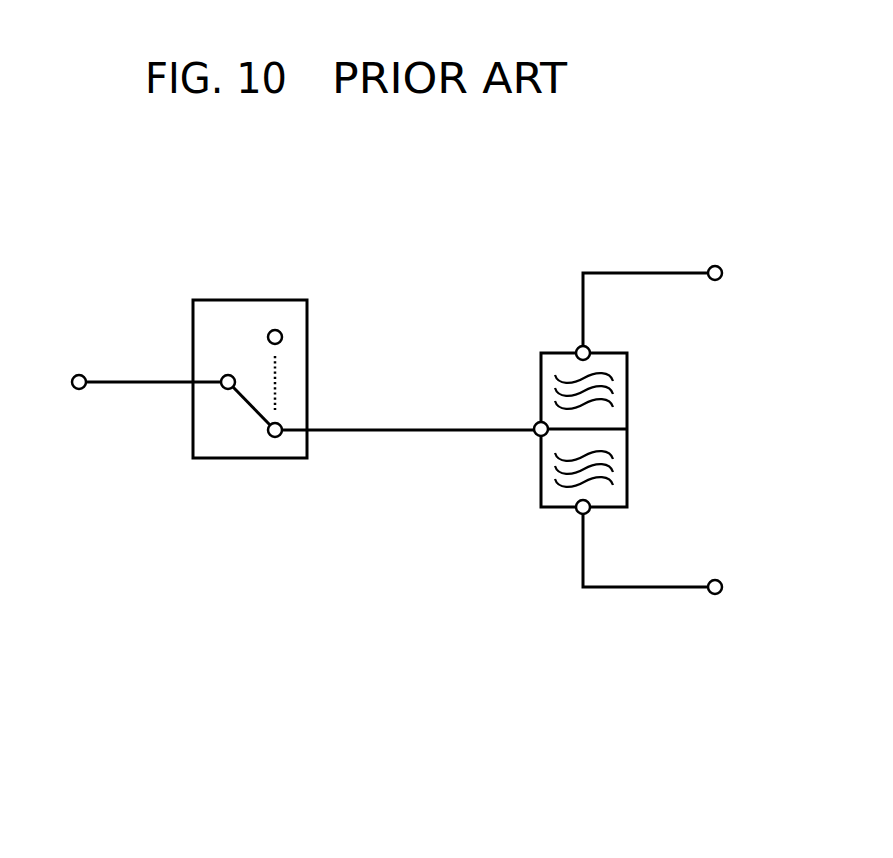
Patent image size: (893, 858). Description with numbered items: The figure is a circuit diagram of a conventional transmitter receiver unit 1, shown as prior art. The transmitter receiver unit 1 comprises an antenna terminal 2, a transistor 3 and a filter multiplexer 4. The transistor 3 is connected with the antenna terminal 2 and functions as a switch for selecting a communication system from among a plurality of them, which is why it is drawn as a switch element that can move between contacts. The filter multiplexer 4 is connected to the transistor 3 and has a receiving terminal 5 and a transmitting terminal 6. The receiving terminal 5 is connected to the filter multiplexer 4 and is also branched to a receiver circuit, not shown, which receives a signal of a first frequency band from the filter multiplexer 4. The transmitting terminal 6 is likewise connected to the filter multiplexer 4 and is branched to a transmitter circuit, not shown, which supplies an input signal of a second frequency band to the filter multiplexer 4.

The transmitter receiver unit 1 is at (127, 290).
The antenna terminal 2 is at (77, 365).
The transistor 3 is at (247, 300).
The filter multiplexer 4 is at (628, 442).
The receiving terminal 5 is at (715, 258).
The transmitting terminal 6 is at (715, 600).